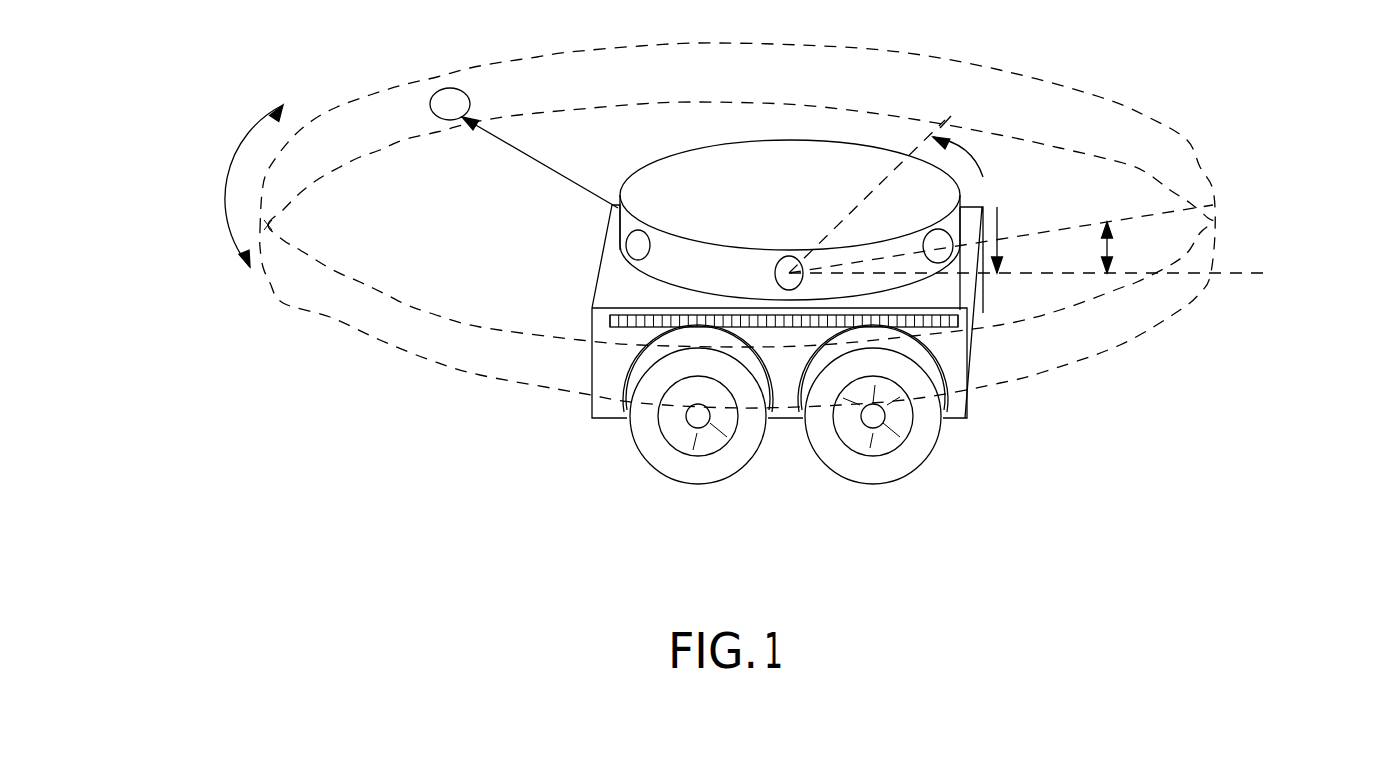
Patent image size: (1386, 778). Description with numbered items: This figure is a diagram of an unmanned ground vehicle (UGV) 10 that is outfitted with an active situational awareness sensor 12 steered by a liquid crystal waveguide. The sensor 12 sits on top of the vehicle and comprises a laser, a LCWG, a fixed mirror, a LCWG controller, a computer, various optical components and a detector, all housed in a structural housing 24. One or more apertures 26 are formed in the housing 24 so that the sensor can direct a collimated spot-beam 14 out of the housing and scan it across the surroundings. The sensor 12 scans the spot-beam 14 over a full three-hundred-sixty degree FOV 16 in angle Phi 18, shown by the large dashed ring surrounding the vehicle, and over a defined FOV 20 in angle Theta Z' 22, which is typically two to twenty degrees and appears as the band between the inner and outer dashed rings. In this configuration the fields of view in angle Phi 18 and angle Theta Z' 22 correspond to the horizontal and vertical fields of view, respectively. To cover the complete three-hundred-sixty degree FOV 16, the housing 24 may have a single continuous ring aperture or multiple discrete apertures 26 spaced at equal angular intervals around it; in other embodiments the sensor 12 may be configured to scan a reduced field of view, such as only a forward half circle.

The unmanned ground vehicle 10 is at (563, 468).
The active situational awareness sensor 12 is at (683, 132).
The collimated spot-beam 14 is at (436, 89).
The 360° FOV 16 is at (228, 187).
The angle Phi 18 is at (998, 212).
The defined FOV 20 is at (459, 318).
The angle Theta Z' 22 is at (1110, 246).
The structural housing 24 is at (632, 245).
The aperture 26 is at (1140, 215).